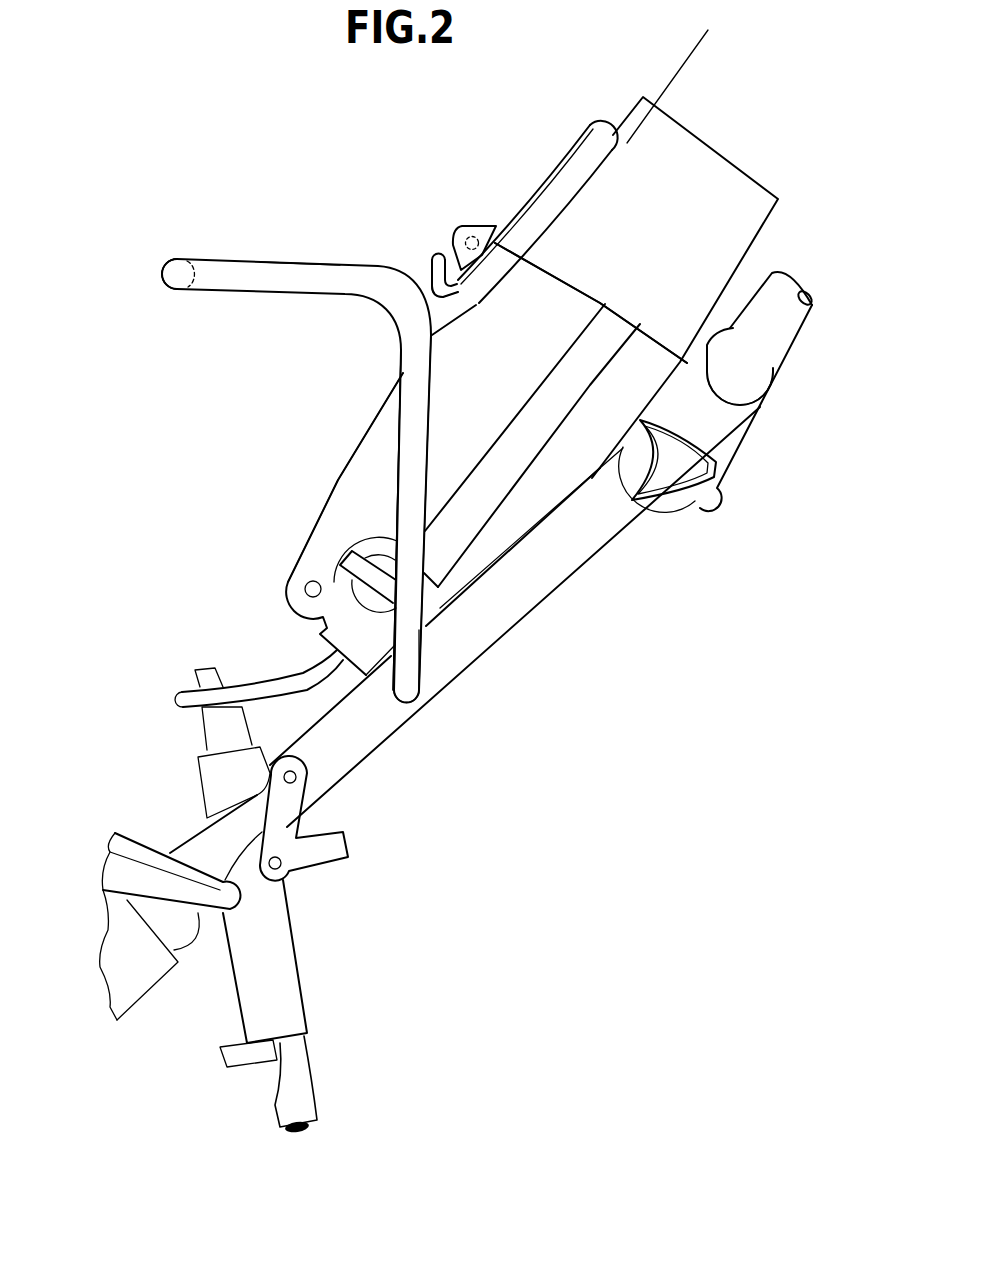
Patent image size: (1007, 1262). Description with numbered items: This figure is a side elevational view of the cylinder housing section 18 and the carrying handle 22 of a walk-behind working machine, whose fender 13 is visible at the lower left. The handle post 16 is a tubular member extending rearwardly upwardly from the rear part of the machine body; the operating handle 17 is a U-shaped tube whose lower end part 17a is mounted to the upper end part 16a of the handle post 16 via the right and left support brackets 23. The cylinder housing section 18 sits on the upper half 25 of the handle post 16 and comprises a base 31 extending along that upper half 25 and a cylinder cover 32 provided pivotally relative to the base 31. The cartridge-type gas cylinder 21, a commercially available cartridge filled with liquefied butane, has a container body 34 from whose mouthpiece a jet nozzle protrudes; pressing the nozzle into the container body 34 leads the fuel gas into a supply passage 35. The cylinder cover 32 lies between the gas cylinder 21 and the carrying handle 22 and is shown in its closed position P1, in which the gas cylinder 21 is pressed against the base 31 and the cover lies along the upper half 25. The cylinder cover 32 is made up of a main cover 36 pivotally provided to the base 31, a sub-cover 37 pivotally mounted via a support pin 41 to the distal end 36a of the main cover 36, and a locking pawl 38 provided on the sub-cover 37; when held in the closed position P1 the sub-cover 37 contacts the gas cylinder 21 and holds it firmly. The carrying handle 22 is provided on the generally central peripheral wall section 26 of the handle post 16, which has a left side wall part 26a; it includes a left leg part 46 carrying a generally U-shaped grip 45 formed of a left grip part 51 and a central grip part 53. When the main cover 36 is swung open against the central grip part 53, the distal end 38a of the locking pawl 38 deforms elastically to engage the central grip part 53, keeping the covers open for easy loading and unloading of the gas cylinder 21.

The closed position P1 is at (683, 73).
The fender 13 is at (133, 848).
The handle post 16 is at (465, 680).
The upper end part 16a is at (627, 517).
The operating handle 17 is at (813, 322).
The lower end part 17a is at (740, 383).
The cylinder housing section 18 is at (317, 470).
The gas cylinder 21 is at (733, 152).
The carrying handle 22 is at (240, 256).
The support bracket 23 is at (732, 428).
The upper half 25 is at (538, 580).
The central peripheral wall section 26 is at (400, 723).
The left side wall part 26a is at (428, 682).
The base 31 is at (590, 427).
The cylinder cover 32 is at (367, 420).
The container body 34 is at (667, 146).
The supply passage 35 is at (265, 692).
The main cover 36 is at (393, 402).
The distal end 36a is at (530, 281).
The sub-cover 37 is at (530, 197).
The locking pawl 38 is at (443, 298).
The distal end 38a is at (437, 262).
The support pin 41 is at (470, 238).
The grip 45 is at (165, 263).
The left leg part 46 is at (405, 497).
The left grip part 51 is at (300, 264).
The central grip part 53 is at (175, 287).